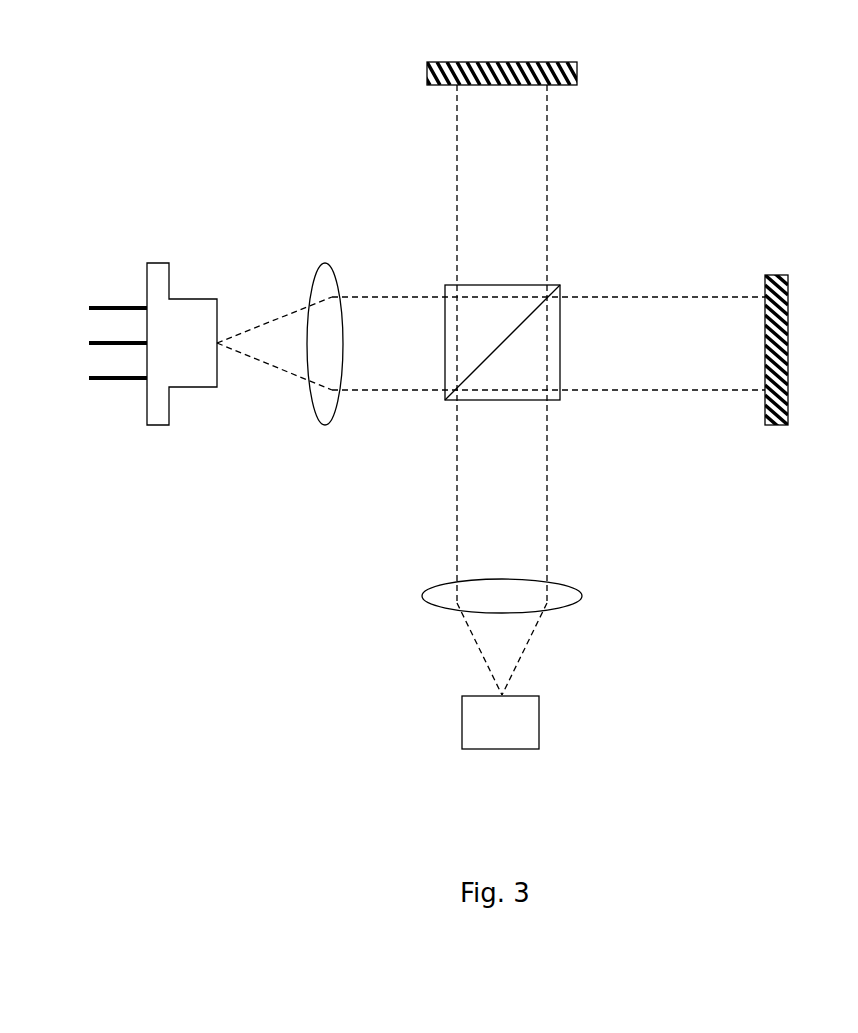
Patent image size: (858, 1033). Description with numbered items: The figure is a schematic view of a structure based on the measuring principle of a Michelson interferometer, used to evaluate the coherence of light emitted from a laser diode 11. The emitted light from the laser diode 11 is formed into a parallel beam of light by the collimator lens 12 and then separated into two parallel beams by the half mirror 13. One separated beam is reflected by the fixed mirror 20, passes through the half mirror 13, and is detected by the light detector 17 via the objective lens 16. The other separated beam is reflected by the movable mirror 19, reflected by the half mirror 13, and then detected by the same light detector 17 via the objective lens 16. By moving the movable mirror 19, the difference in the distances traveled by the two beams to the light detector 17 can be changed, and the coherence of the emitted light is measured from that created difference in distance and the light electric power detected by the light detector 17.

The laser diode 11 is at (160, 263).
The collimator lens 12 is at (332, 263).
The half mirror 13 is at (560, 397).
The objective lens 16 is at (582, 595).
The light detector 17 is at (537, 719).
The movable mirror 19 is at (777, 275).
The fixed mirror 20 is at (582, 83).